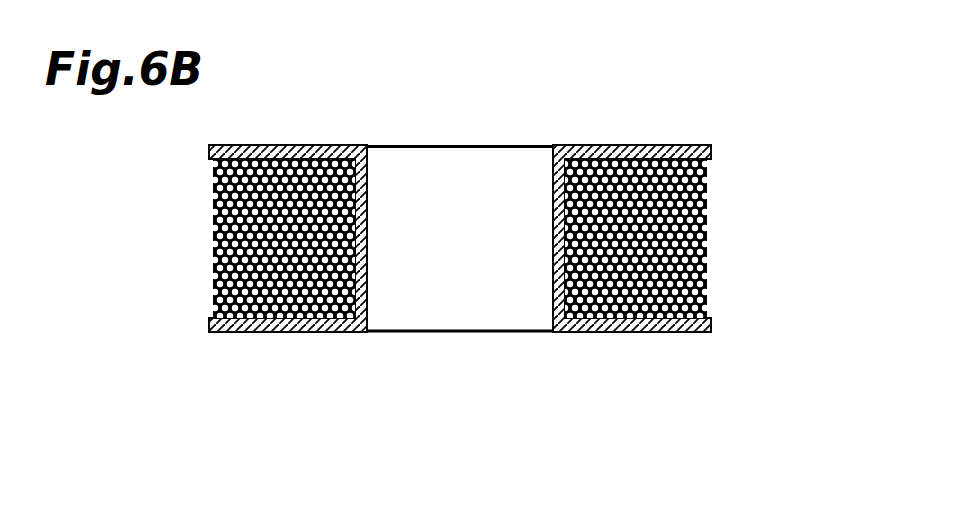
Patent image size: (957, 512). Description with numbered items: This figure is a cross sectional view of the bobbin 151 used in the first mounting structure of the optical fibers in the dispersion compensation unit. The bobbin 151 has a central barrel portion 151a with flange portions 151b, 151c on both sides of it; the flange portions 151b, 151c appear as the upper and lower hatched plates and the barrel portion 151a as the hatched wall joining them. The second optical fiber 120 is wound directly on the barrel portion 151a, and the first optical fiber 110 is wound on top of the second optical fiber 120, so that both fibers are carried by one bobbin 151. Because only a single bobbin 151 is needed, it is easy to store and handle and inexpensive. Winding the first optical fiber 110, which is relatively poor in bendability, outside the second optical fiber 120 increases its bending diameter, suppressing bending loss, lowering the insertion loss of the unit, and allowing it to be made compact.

The first optical fiber 110 is at (240, 308).
The second optical fiber 120 is at (335, 308).
The bobbin 151 is at (475, 235).
The barrel portion 151a is at (551, 300).
The flange portion 151b is at (668, 145).
The flange portion 151c is at (655, 332).